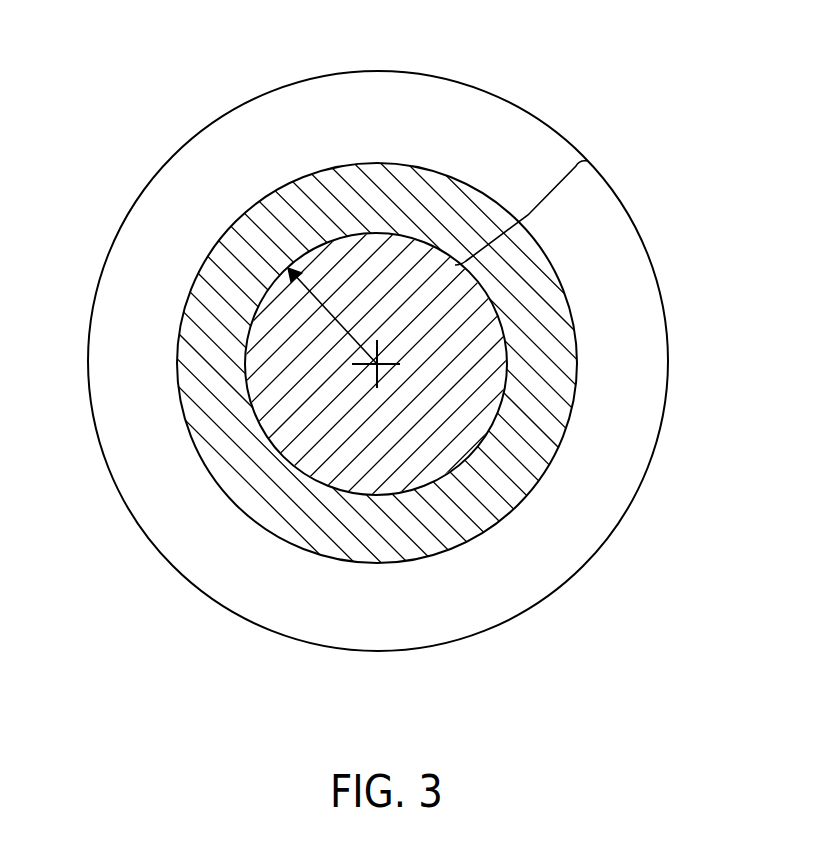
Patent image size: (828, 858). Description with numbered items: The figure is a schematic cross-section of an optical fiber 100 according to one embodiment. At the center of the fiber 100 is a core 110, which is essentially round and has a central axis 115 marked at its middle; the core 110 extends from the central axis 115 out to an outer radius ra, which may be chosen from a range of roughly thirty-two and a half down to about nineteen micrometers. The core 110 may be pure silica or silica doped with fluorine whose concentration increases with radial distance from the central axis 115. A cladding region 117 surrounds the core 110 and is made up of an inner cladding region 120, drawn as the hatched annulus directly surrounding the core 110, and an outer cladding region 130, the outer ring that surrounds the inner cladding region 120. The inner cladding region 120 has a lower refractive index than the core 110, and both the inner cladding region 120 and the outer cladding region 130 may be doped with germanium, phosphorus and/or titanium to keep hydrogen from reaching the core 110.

The fiber 100 is at (185, 85).
The core 110 is at (470, 397).
The central axis 115 is at (375, 366).
The cladding region 117 is at (530, 216).
The inner cladding region 120 is at (537, 348).
The outer cladding region 130 is at (444, 119).
The outer radius ra is at (316, 303).